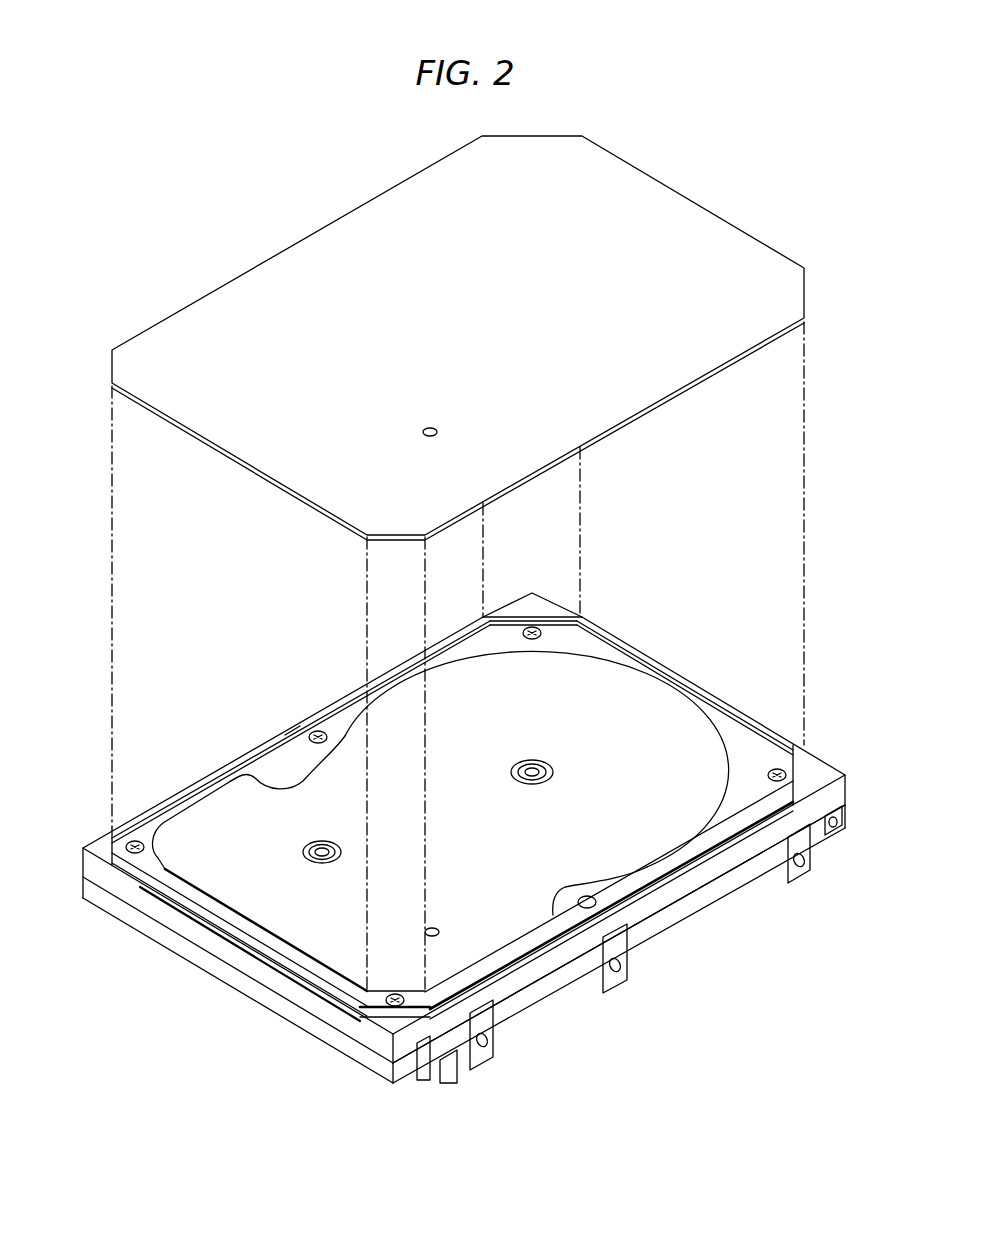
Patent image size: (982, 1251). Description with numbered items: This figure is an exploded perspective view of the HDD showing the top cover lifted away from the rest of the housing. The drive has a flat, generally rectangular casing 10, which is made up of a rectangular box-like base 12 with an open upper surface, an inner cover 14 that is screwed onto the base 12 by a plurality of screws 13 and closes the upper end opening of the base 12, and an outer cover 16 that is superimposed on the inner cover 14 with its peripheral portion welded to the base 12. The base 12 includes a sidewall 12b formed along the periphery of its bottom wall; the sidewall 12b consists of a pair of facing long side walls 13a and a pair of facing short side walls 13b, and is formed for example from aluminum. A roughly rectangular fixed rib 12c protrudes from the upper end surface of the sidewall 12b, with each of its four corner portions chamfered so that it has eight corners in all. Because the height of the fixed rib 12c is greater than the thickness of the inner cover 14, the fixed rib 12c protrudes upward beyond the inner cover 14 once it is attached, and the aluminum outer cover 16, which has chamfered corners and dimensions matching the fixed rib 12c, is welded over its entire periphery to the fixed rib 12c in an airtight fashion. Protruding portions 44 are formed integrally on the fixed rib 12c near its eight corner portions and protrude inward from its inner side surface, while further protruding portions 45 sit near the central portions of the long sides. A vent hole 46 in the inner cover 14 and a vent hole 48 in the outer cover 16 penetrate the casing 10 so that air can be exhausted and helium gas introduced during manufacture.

The casing 10 is at (189, 637).
The base 12 is at (661, 955).
The sidewall 12b is at (574, 1004).
The fixed rib 12c is at (720, 700).
The screws 13 is at (312, 730).
The long side walls 13a is at (712, 922).
The short side walls 13b is at (233, 965).
The inner cover 14 is at (618, 700).
The outer cover 16 is at (345, 226).
The protruding portions 44 is at (483, 617).
The protruding portions 45 is at (295, 728).
The vent hole 46 is at (442, 930).
The vent hole 48 is at (440, 432).